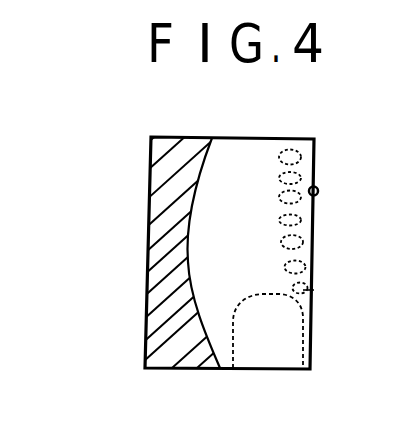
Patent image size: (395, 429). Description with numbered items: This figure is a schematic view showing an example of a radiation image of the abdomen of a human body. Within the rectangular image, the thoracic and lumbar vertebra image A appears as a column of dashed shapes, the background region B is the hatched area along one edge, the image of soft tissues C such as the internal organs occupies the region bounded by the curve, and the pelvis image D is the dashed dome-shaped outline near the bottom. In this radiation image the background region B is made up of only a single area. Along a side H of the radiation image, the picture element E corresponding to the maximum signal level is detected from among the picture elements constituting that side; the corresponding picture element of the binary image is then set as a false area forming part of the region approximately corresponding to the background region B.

The thoracic and lumbar vertebra image A is at (270, 186).
The background region B is at (150, 174).
The image of soft tissues C is at (243, 150).
The pelvis image D is at (283, 357).
The picture element E is at (318, 190).
The side of the radiation image H is at (311, 290).